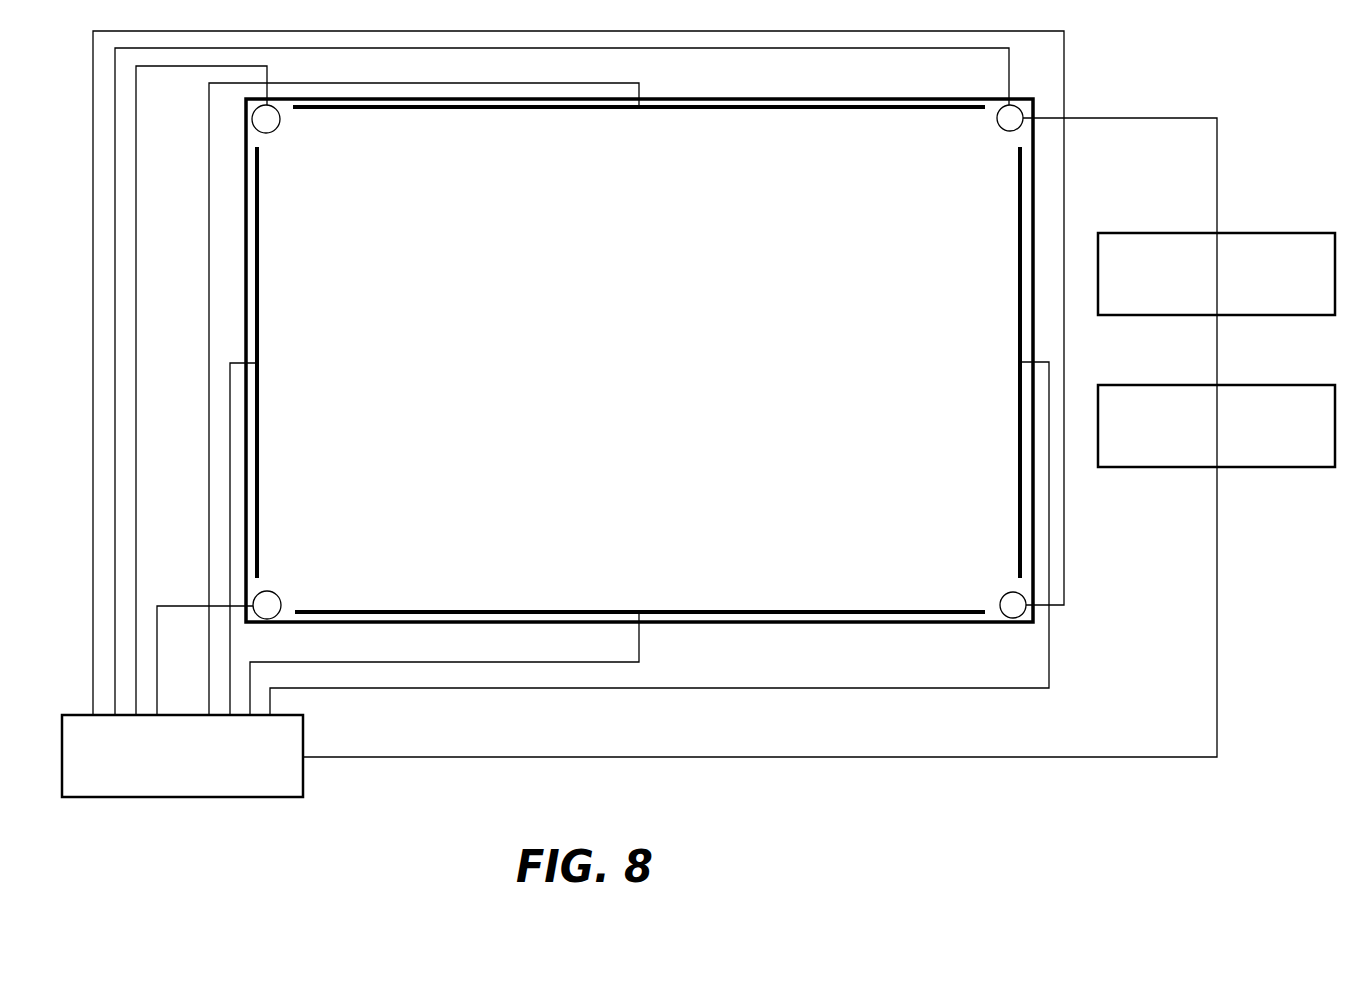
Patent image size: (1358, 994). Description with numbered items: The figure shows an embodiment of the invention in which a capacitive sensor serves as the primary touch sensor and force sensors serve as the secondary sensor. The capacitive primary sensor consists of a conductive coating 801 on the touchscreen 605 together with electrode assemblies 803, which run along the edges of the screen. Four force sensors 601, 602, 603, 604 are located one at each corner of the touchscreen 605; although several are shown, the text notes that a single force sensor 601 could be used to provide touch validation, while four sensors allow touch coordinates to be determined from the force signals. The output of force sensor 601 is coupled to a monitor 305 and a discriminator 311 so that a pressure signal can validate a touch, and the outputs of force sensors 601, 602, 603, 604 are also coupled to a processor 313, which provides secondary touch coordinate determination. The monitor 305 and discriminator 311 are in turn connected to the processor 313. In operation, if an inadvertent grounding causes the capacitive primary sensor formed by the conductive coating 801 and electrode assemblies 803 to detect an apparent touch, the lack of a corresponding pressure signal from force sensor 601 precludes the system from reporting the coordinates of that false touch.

The monitor 305 is at (1255, 233).
The discriminator 311 is at (1265, 385).
The processor 313 is at (303, 734).
The force sensor 601 is at (999, 125).
The force sensor 602 is at (276, 129).
The force sensor 603 is at (279, 595).
The force sensor 604 is at (1003, 596).
The touchscreen 605 is at (621, 381).
The conductive coating 801 is at (990, 155).
The electrode assemblies 803 is at (769, 109).